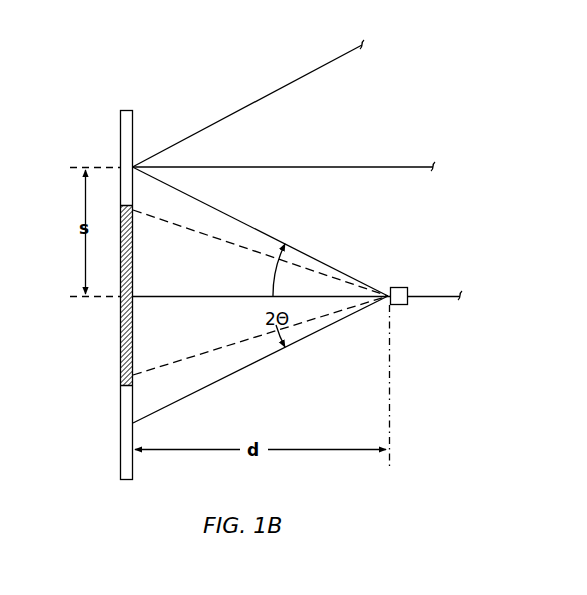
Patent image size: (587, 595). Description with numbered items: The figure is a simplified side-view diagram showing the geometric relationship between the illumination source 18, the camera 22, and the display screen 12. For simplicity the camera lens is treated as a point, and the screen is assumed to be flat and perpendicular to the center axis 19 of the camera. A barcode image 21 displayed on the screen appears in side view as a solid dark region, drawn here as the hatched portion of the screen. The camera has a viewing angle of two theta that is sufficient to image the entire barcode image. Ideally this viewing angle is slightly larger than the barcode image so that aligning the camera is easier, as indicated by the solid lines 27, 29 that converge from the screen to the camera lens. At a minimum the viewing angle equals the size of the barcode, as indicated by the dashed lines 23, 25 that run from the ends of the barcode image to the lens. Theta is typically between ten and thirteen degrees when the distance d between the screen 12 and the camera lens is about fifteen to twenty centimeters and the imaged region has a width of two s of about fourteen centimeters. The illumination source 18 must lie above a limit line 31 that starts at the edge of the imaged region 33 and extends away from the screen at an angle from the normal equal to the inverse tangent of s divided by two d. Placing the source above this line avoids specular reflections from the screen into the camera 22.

The display screen 12 is at (133, 118).
The illumination source 18 is at (232, 77).
The center axis 19 is at (432, 296).
The barcode image 21 is at (120, 327).
The camera 22 is at (398, 287).
The dashed line 23 is at (238, 243).
The dashed line 25 is at (238, 343).
The solid line 27 is at (208, 205).
The solid line 29 is at (222, 380).
The limit line 31 is at (258, 101).
The edge of the imaged region 33 is at (150, 160).